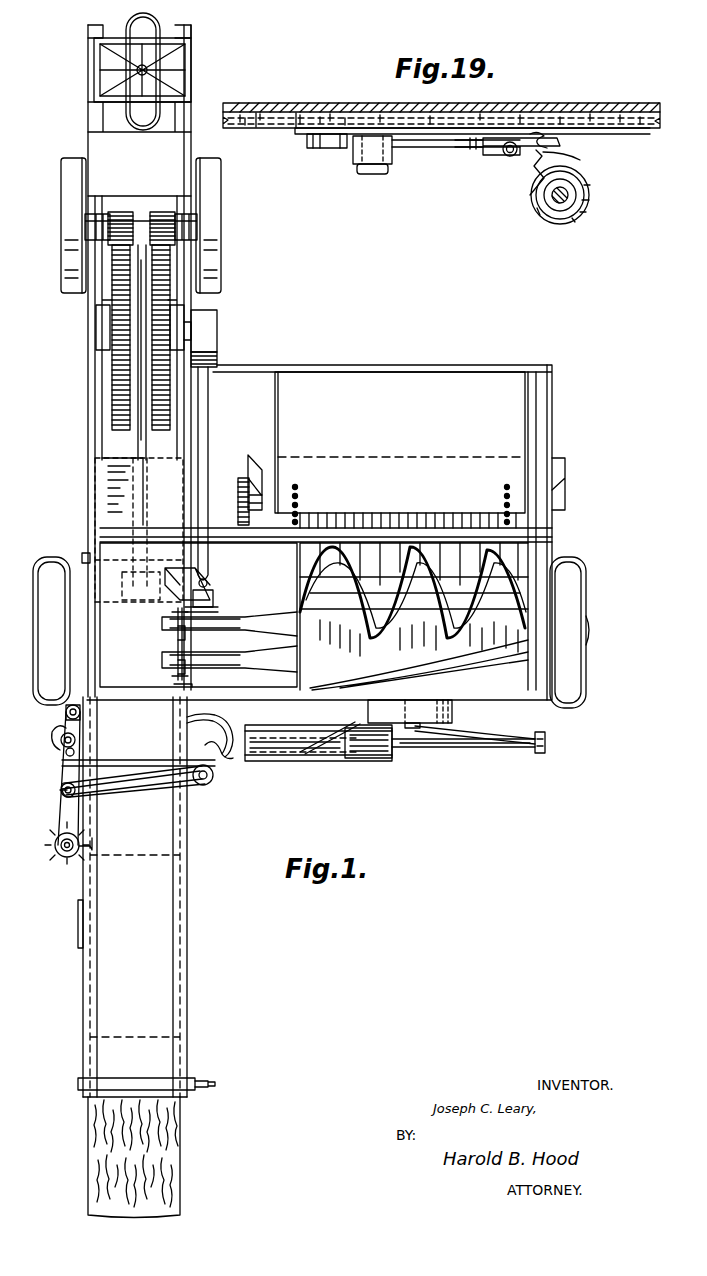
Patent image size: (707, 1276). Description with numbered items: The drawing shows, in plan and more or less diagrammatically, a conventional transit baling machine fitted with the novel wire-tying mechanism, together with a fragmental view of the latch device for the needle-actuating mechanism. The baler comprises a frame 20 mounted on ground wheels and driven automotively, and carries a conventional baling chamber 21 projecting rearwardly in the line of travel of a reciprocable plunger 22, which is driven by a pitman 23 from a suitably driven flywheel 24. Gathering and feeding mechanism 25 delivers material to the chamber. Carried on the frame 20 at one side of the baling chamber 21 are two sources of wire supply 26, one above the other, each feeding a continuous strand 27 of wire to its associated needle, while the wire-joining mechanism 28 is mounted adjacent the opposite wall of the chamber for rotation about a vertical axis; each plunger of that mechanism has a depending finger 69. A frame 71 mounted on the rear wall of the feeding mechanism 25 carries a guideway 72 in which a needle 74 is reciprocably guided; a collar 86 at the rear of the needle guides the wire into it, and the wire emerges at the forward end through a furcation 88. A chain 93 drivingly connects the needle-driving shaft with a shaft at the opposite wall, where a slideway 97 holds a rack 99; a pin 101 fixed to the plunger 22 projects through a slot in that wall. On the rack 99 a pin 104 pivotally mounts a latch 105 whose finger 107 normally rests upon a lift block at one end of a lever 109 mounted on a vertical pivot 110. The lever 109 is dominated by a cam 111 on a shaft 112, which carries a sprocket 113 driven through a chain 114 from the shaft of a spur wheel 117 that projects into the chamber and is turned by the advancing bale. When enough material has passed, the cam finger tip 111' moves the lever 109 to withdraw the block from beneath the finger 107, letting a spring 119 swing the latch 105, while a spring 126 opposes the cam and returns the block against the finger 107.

In FIG. 1, the frame 20 is at (94, 400).
In FIG. 1, the baling chamber 21 is at (190, 945).
In FIG. 19, the baling chamber 21 is at (604, 112).
In FIG. 1, the plunger 22 is at (117, 605).
In FIG. 1, the pitman 23 is at (138, 442).
In FIG. 1, the flywheel 24 is at (110, 378).
In FIG. 1, the gathering and feeding mechanism 25 is at (583, 517).
In FIG. 1, the source of wire supply 26 is at (453, 708).
In FIG. 1, the strand of wire 27 is at (470, 730).
In FIG. 1, the wire-joining mechanism 28 is at (49, 760).
In FIG. 1, the depending finger 69 is at (220, 768).
In FIG. 1, the frame 71 is at (334, 758).
In FIG. 1, the guideway 72 is at (365, 748).
In FIG. 1, the needle 74 is at (418, 747).
In FIG. 1, the collar 86 is at (541, 754).
In FIG. 1, the furcation 88 is at (238, 716).
In FIG. 1, the chain 93 is at (138, 795).
In FIG. 1, the slideway 97 is at (78, 922).
In FIG. 19, the slideway 97 is at (266, 120).
In FIG. 19, the rack 99 is at (298, 134).
In FIG. 1, the pin 101 is at (84, 558).
In FIG. 19, the pin 104 is at (372, 176).
In FIG. 19, the latch 105 is at (430, 146).
In FIG. 19, the finger 107 is at (470, 146).
In FIG. 19, the lever 109 is at (496, 155).
In FIG. 19, the pivot 110 is at (511, 158).
In FIG. 19, the cam 111 is at (587, 195).
In FIG. 19, the cam finger tip 111' is at (542, 183).
In FIG. 19, the shaft 112 is at (554, 204).
In FIG. 1, the sprocket 113 is at (66, 712).
In FIG. 1, the chain 114 is at (58, 812).
In FIG. 1, the spur wheel 117 is at (55, 862).
In FIG. 19, the spring 119 is at (330, 146).
In FIG. 19, the spring 126 is at (540, 132).